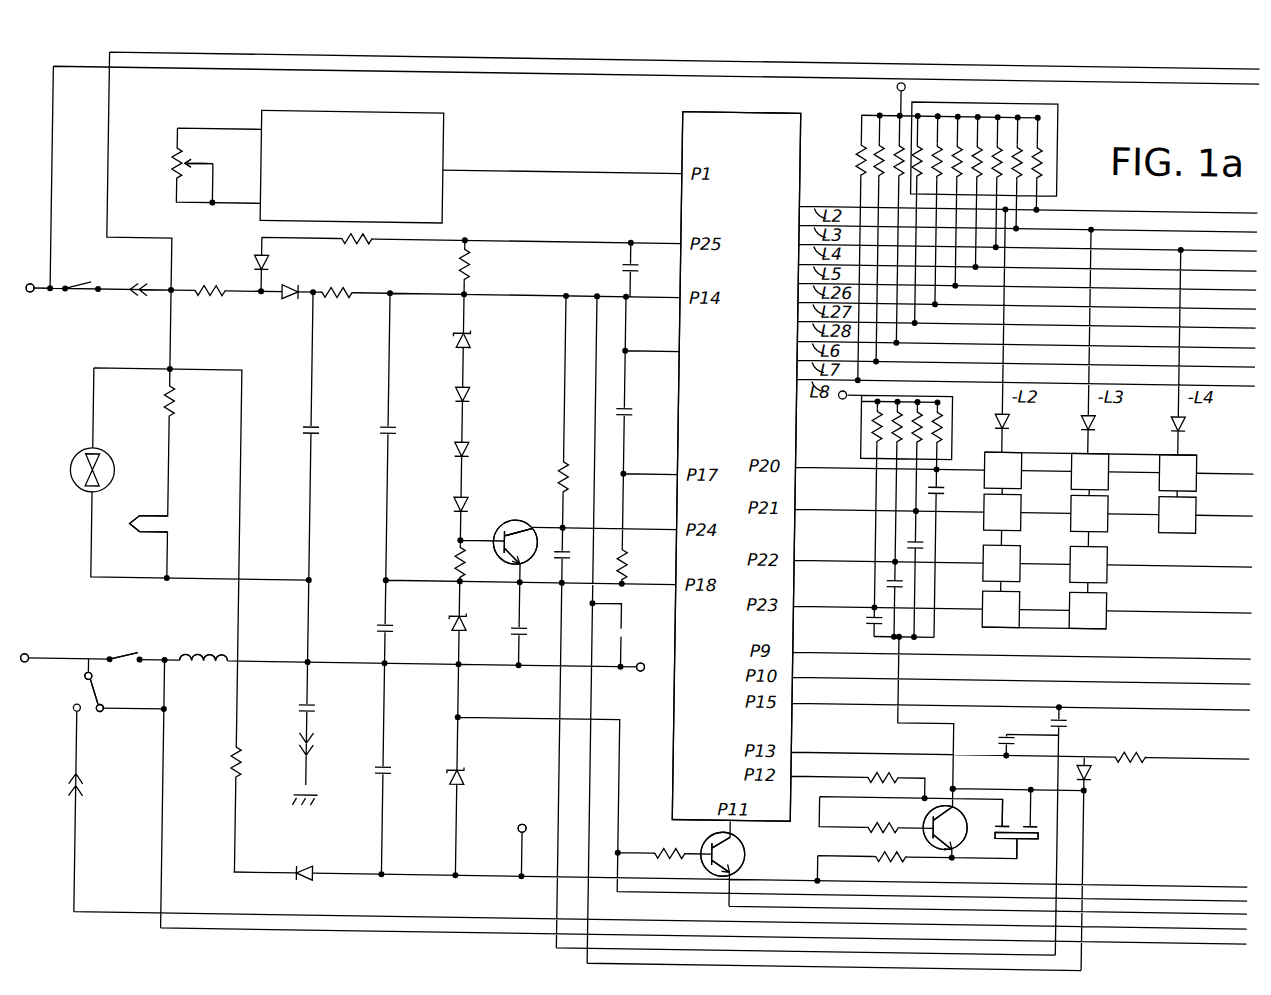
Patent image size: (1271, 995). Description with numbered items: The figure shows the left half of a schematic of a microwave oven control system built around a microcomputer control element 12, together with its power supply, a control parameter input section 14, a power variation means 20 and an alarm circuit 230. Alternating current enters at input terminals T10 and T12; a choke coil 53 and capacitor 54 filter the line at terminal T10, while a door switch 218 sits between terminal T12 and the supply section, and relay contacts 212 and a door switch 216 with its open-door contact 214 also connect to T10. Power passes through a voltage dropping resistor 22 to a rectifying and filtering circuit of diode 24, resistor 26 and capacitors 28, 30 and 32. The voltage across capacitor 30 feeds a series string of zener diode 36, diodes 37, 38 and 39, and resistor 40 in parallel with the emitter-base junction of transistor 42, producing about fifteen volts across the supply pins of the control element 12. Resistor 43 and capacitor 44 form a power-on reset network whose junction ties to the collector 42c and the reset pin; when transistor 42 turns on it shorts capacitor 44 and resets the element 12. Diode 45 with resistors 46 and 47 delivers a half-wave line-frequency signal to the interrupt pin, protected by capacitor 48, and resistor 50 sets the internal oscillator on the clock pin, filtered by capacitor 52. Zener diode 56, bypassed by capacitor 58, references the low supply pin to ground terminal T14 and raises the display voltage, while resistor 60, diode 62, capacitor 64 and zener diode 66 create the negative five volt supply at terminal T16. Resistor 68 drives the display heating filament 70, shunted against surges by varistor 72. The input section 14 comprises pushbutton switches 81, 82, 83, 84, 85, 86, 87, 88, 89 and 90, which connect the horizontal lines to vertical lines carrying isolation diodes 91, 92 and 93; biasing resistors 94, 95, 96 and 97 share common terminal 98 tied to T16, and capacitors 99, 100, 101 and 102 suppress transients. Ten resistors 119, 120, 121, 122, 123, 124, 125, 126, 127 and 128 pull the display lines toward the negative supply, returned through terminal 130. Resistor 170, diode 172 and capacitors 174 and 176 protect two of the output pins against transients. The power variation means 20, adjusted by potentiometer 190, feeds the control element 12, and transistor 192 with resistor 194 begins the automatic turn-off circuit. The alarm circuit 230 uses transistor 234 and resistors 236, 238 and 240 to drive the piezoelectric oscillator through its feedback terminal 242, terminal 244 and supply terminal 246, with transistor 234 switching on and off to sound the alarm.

The microcomputer control element 12 is at (677, 111).
The control parameter input section 14 is at (1222, 551).
The power variation means 20 is at (438, 148).
The voltage dropping resistor 22 is at (212, 300).
The diode 24 is at (283, 302).
The resistor 26 is at (336, 302).
The capacitor 28 is at (304, 433).
The capacitor 30 is at (382, 432).
The capacitor 32 is at (382, 632).
The zener diode 36 is at (454, 346).
The diode 37 is at (454, 398).
The diode 38 is at (454, 453).
The diode 39 is at (454, 508).
The resistor 40 is at (454, 564).
The transistor 42 is at (506, 526).
The collector 42c is at (530, 530).
The resistor 43 is at (560, 476).
The capacitor 44 is at (572, 561).
The diode 45 is at (249, 270).
The resistor 46 is at (354, 245).
The resistor 47 is at (454, 269).
The capacitor 48 is at (619, 268).
The resistor 50 is at (629, 565).
The capacitor 52 is at (629, 412).
The choke coil 53 is at (218, 662).
The capacitor 54 is at (318, 712).
The zener diode 56 is at (451, 633).
The capacitor 58 is at (510, 634).
The resistor 60 is at (244, 770).
The diode 62 is at (313, 883).
The capacitor 64 is at (391, 772).
The zener diode 66 is at (470, 784).
The resistor 68 is at (172, 414).
The heating filament 70 is at (145, 542).
The varistor 72 is at (113, 476).
The pushbutton switch 81 is at (1020, 458).
The pushbutton switch 82 is at (1020, 503).
The pushbutton switch 83 is at (1020, 548).
The pushbutton switch 84 is at (1020, 596).
The pushbutton switch 85 is at (1106, 457).
The pushbutton switch 86 is at (1106, 502).
The pushbutton switch 87 is at (1106, 547).
The pushbutton switch 88 is at (1106, 595).
The pushbutton switch 89 is at (1194, 455).
The pushbutton switch 90 is at (1194, 500).
The isolation diode 91 is at (1008, 416).
The isolation diode 92 is at (1094, 415).
The isolation diode 93 is at (1184, 414).
The biasing resistor 94 is at (868, 430).
The biasing resistor 95 is at (888, 436).
The biasing resistor 96 is at (920, 408).
The biasing resistor 97 is at (940, 428).
The common terminal 98 is at (845, 396).
The capacitor 99 is at (942, 486).
The capacitor 100 is at (922, 544).
The capacitor 101 is at (890, 582).
The capacitor 102 is at (870, 620).
The resistor 119 is at (850, 154).
The resistor 120 is at (856, 136).
The resistor 121 is at (874, 178).
The resistor 122 is at (896, 126).
The resistor 123 is at (918, 128).
The resistor 124 is at (945, 126).
The resistor 125 is at (967, 123).
The resistor 126 is at (987, 129).
The resistor 127 is at (1006, 138).
The resistor 128 is at (1038, 174).
The terminal 130 is at (890, 85).
The resistor 170 is at (1148, 748).
The diode 172 is at (1095, 767).
The capacitor 174 is at (1054, 717).
The capacitor 176 is at (1002, 741).
The potentiometer 190 is at (165, 170).
The transistor 192 is at (750, 855).
The resistor 194 is at (676, 850).
The relay contacts 212 is at (130, 662).
The door switch contact 214 is at (104, 719).
The door switch 216 is at (90, 703).
The door switch 218 is at (81, 285).
The alarm circuit 230 is at (948, 770).
The transistor 234 is at (961, 848).
The resistor 236 is at (882, 774).
The resistor 238 is at (878, 824).
The resistor 240 is at (882, 853).
The feedback terminal 242 is at (1007, 820).
The oscillator terminal 244 is at (1028, 839).
The voltage supply terminal 246 is at (1041, 820).
The input terminal T10 is at (30, 662).
The input terminal T12 is at (27, 300).
The voltage reference terminal T14 is at (643, 672).
The negative five volt terminal T16 is at (524, 826).